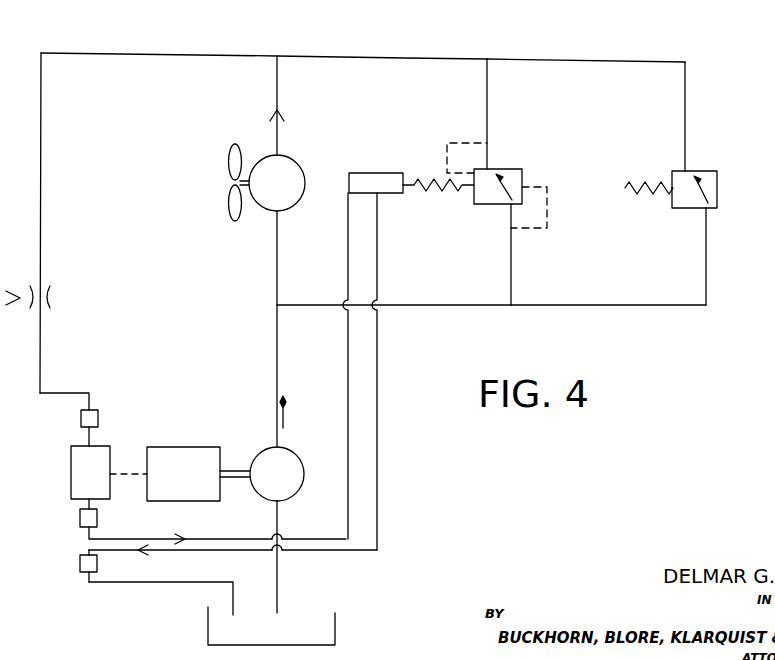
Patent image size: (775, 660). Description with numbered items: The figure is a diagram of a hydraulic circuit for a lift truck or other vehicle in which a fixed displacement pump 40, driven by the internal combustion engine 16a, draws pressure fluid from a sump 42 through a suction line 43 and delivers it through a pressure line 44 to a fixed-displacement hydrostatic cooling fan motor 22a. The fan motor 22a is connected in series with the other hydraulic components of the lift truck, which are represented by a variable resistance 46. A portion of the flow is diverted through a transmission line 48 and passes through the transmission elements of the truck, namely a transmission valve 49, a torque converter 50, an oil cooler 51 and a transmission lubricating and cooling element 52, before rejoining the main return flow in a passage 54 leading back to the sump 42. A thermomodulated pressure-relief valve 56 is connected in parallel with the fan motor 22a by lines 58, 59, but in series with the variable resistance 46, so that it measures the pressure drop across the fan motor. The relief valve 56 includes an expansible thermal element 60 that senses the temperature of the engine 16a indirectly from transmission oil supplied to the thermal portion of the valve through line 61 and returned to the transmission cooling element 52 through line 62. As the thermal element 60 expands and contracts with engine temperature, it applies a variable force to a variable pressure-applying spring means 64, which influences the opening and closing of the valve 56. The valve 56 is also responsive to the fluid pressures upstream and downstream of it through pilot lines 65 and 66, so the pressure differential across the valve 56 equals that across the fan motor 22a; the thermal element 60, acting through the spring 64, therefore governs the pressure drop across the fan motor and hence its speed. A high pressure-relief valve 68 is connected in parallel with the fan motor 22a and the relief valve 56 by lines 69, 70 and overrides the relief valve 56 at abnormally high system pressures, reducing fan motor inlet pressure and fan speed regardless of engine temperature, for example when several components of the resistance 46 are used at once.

The internal combustion engine 16a is at (193, 438).
The fixed-displacement hydrostatic cooling fan motor 22a is at (264, 210).
The fixed displacement pump 40 is at (251, 461).
The sump 42 is at (335, 630).
The suction line 43 is at (281, 528).
The pressure line 44 is at (275, 367).
The variable resistance 46 is at (52, 305).
The transmission line 48 is at (82, 393).
The transmission valve 49 is at (98, 419).
The torque converter 50 is at (110, 448).
The oil cooler 51 is at (80, 517).
The transmission lubricating and cooling element 52 is at (80, 560).
The passage 54 is at (150, 586).
The thermomodulated pressure-relief valve 56 is at (518, 168).
The line 58 is at (420, 310).
The line 59 is at (405, 58).
The expansible thermal element 60 is at (376, 173).
The line 61 is at (347, 243).
The line 62 is at (378, 262).
The variable pressure-applying spring means 64 is at (438, 194).
The pilot line 65 is at (547, 226).
The pilot line 66 is at (453, 143).
The high pressure-relief valve 68 is at (717, 188).
The line 69 is at (585, 310).
The line 70 is at (585, 62).